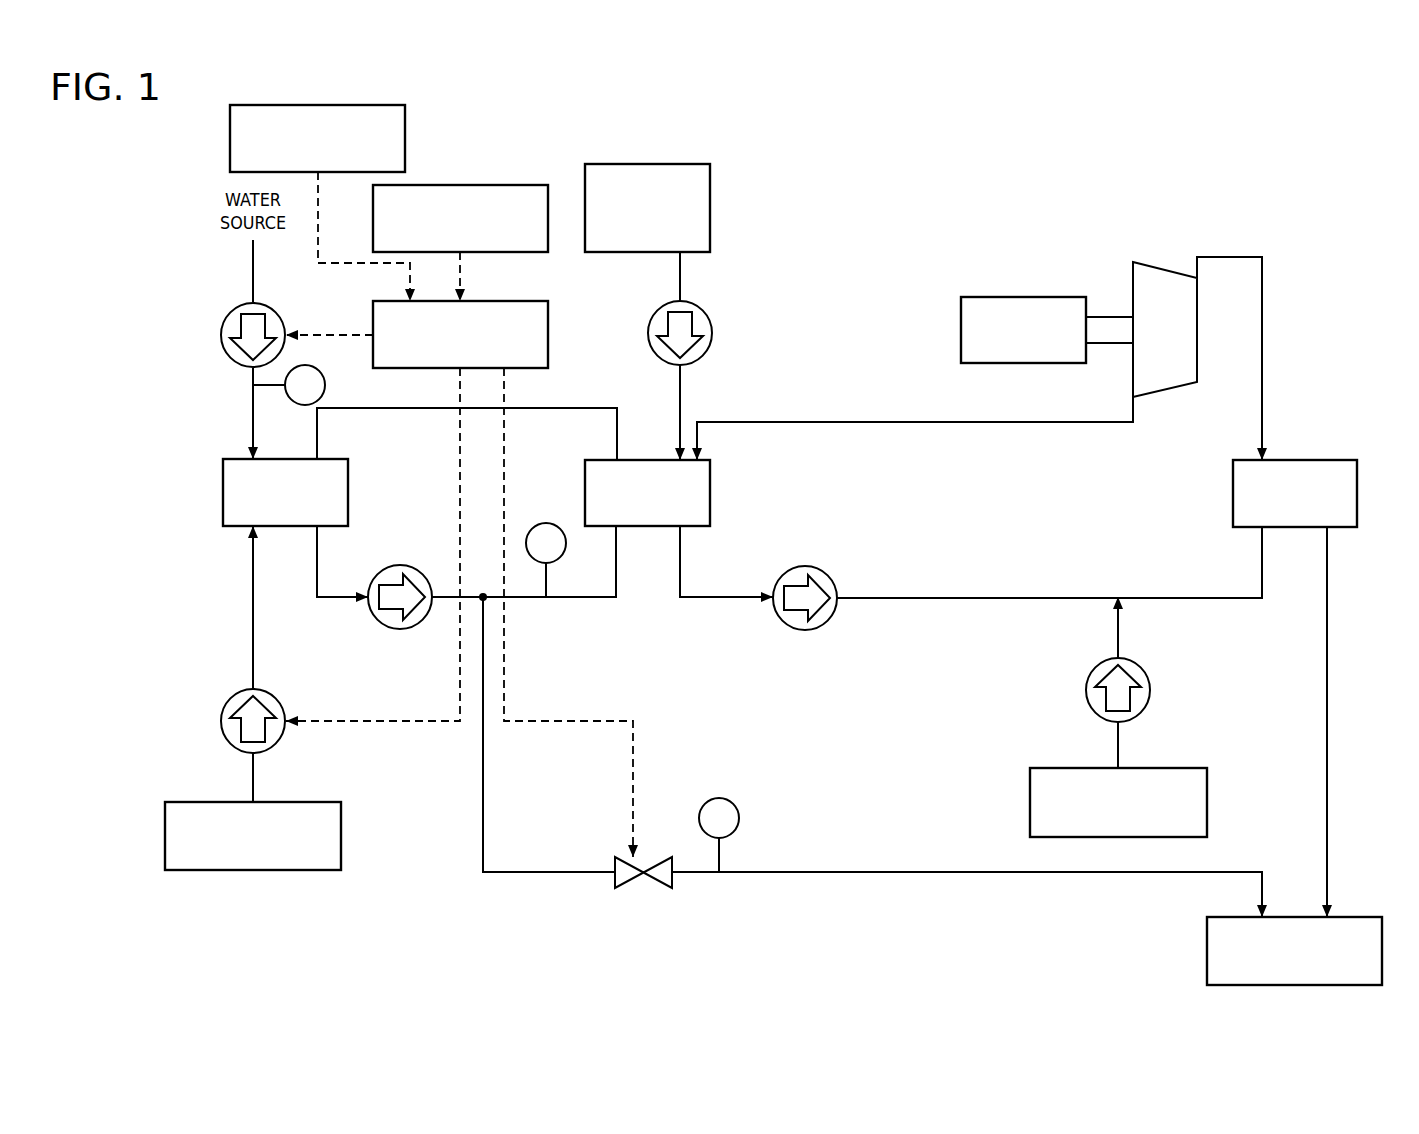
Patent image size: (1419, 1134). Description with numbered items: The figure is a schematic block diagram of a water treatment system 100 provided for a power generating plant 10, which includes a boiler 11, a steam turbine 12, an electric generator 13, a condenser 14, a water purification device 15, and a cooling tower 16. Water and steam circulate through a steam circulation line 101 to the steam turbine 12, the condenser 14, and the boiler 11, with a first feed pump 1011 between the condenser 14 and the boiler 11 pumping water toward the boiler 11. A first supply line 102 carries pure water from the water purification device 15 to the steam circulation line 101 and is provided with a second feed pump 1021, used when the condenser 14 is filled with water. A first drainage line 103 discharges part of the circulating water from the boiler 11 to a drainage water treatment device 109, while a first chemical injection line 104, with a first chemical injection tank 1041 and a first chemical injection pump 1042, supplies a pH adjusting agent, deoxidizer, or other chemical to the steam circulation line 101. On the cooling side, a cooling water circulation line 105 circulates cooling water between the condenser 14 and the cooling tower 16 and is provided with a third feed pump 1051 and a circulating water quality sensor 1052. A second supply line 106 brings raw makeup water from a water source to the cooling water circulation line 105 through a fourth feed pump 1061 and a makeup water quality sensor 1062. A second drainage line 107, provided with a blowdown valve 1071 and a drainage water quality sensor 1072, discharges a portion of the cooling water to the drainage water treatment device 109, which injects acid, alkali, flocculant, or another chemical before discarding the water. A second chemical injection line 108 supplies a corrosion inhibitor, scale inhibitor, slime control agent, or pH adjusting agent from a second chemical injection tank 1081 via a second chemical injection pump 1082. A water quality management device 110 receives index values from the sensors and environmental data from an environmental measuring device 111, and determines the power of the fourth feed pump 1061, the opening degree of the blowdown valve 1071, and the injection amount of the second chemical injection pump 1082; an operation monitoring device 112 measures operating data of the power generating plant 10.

The power generating plant 10 is at (1343, 215).
The water treatment system 100 is at (1265, 230).
The boiler 11 is at (1320, 460).
The steam turbine 12 is at (1168, 270).
The electric generator 13 is at (1047, 297).
The condenser 14 is at (710, 492).
The water purification device 15 is at (710, 213).
The cooling tower 16 is at (348, 488).
The steam circulation line 101 is at (963, 597).
The first supply line 102 is at (680, 278).
The first drainage line 103 is at (1327, 707).
The first chemical injection line 104 is at (1118, 637).
The cooling water circulation line 105 is at (580, 597).
The second supply line 106 is at (253, 402).
The second drainage line 107 is at (483, 775).
The second chemical injection line 108 is at (253, 637).
The drainage water treatment device 109 is at (1207, 950).
The water quality management device 110 is at (548, 333).
The environmental measuring device 111 is at (548, 218).
The operation monitoring device 112 is at (405, 137).
The first feed pump 1011 is at (815, 568).
The second feed pump 1021 is at (712, 333).
The first chemical injection tank 1041 is at (1207, 800).
The first chemical injection pump 1042 is at (1150, 690).
The third feed pump 1051 is at (442, 532).
The circulating water quality sensor 1052 is at (546, 523).
The fourth feed pump 1061 is at (220, 335).
The makeup water quality sensor 1062 is at (325, 385).
The blowdown valve 1071 is at (655, 857).
The drainage water quality sensor 1072 is at (719, 798).
The second chemical injection tank 1081 is at (341, 833).
The second chemical injection pump 1082 is at (220, 721).